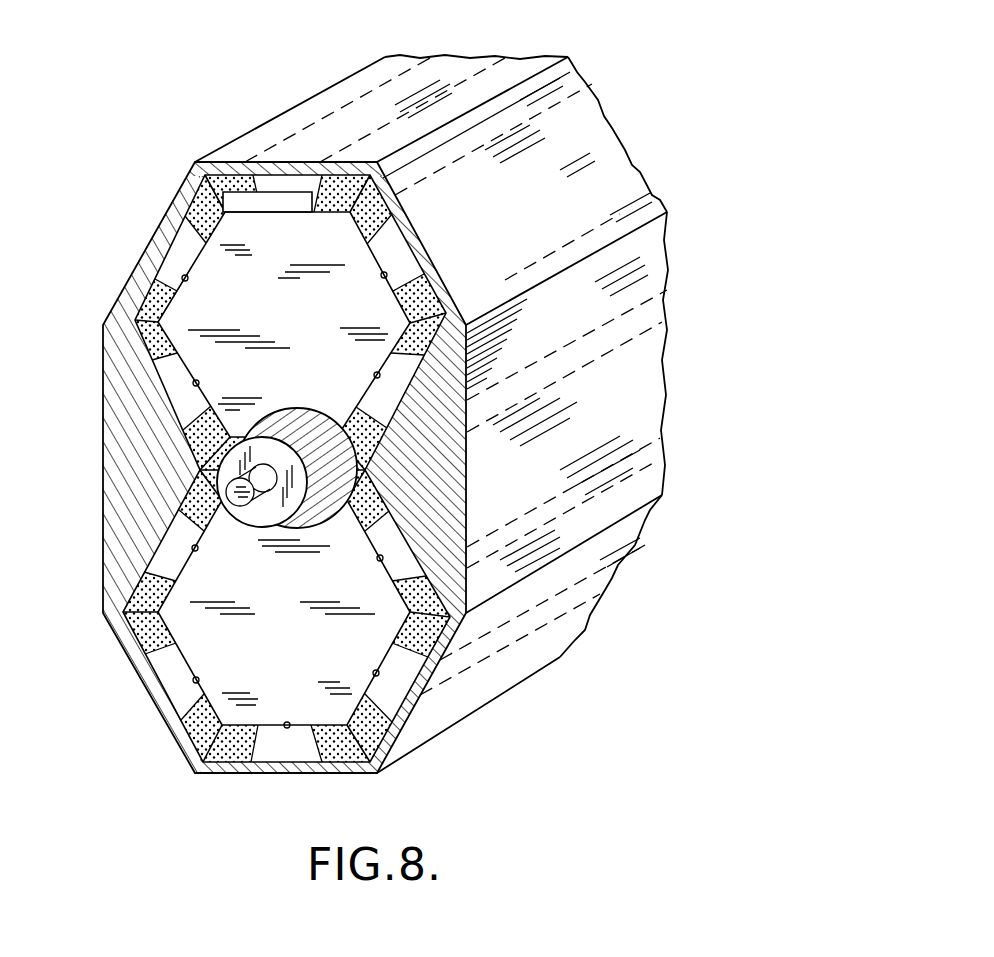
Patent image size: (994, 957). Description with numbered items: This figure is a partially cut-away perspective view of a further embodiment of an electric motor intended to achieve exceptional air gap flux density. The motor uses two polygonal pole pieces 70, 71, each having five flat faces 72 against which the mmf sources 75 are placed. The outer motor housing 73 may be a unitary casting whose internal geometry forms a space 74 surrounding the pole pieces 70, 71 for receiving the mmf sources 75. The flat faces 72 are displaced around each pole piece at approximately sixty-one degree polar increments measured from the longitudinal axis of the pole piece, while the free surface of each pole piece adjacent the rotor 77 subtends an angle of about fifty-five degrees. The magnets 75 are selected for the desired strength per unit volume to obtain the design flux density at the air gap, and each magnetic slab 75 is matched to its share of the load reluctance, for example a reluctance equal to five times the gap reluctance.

The polygonal pole piece 70 is at (273, 318).
The polygonal pole piece 71 is at (273, 653).
The flat faces 72 is at (278, 207).
The outer motor housing 73 is at (103, 478).
The space 74 is at (205, 180).
The mmf sources 75 is at (330, 188).
The rotor 77 is at (296, 427).